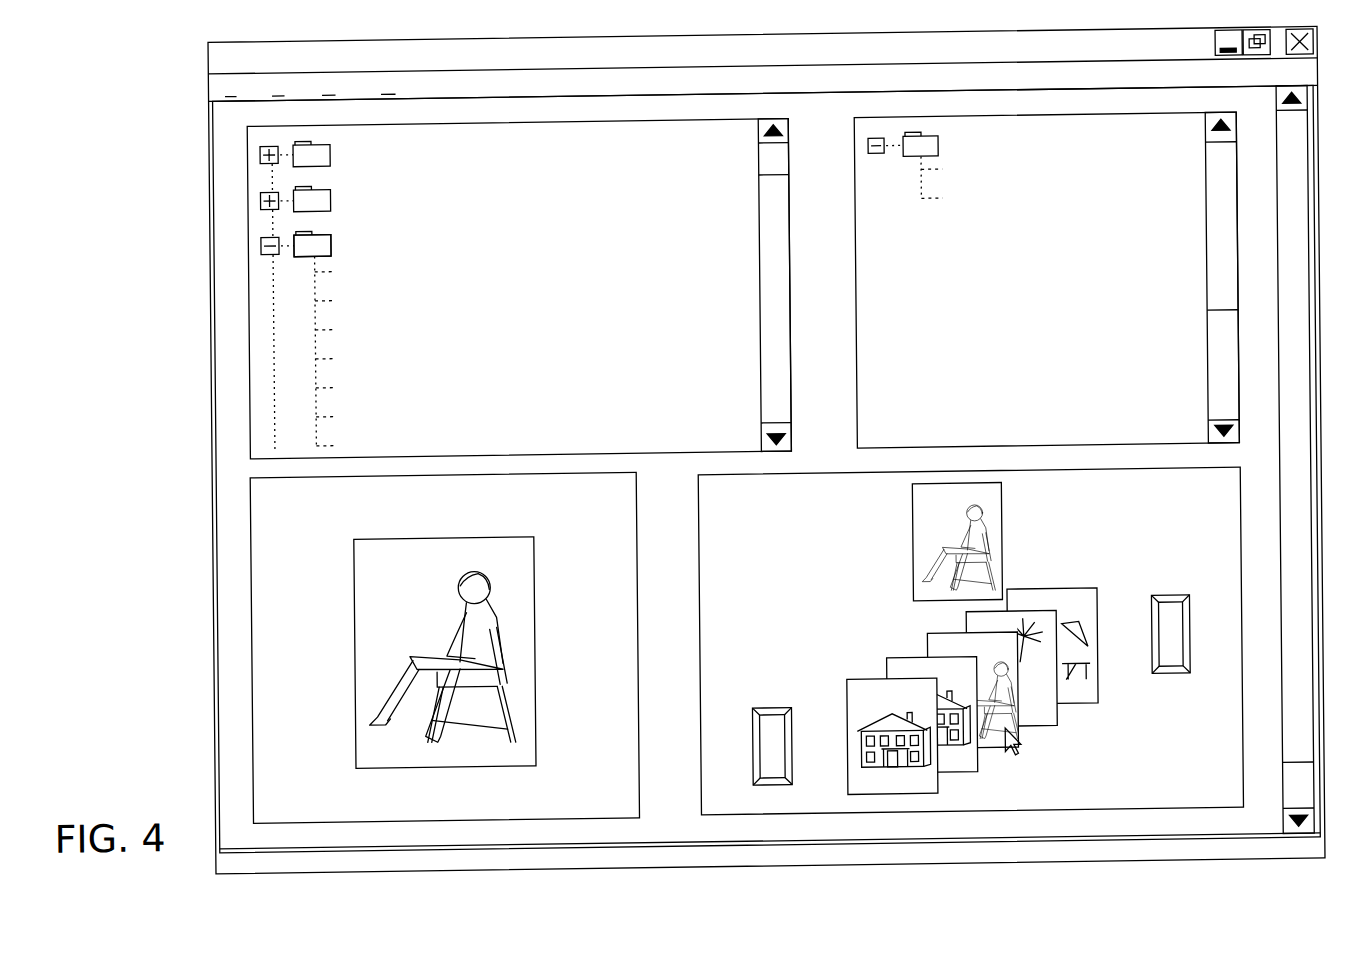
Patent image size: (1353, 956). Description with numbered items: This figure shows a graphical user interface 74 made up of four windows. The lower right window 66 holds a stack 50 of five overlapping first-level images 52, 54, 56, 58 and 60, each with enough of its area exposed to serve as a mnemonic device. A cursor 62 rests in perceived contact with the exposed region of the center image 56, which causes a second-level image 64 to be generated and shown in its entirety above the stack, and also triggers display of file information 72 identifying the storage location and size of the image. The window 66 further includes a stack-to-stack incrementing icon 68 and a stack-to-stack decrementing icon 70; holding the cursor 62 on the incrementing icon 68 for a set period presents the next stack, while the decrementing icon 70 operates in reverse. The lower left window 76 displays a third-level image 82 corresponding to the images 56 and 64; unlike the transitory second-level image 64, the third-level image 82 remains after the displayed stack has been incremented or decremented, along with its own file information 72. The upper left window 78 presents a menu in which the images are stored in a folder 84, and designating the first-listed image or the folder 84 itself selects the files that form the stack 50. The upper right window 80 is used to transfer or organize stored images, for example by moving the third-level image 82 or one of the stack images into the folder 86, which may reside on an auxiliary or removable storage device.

The stack 50 is at (945, 672).
The first-level image 52 is at (853, 688).
The first-level image 54 is at (893, 670).
The first-level image 56 is at (933, 647).
The first-level image 58 is at (1047, 714).
The first-level image 60 is at (1084, 595).
The cursor 62 is at (1016, 756).
The second-level image 64 is at (922, 527).
The window 66 is at (1227, 555).
The stack-to-stack incrementing icon 68 is at (1180, 611).
The stack-to-stack decrementing icon 70 is at (767, 722).
The file information 72 is at (550, 777).
The graphical user interface 74 is at (156, 112).
The window 76 is at (260, 665).
The window 78 is at (259, 325).
The window 80 is at (1192, 275).
The third-level image 82 is at (504, 543).
The folder 84 is at (333, 244).
The folder 86 is at (941, 148).